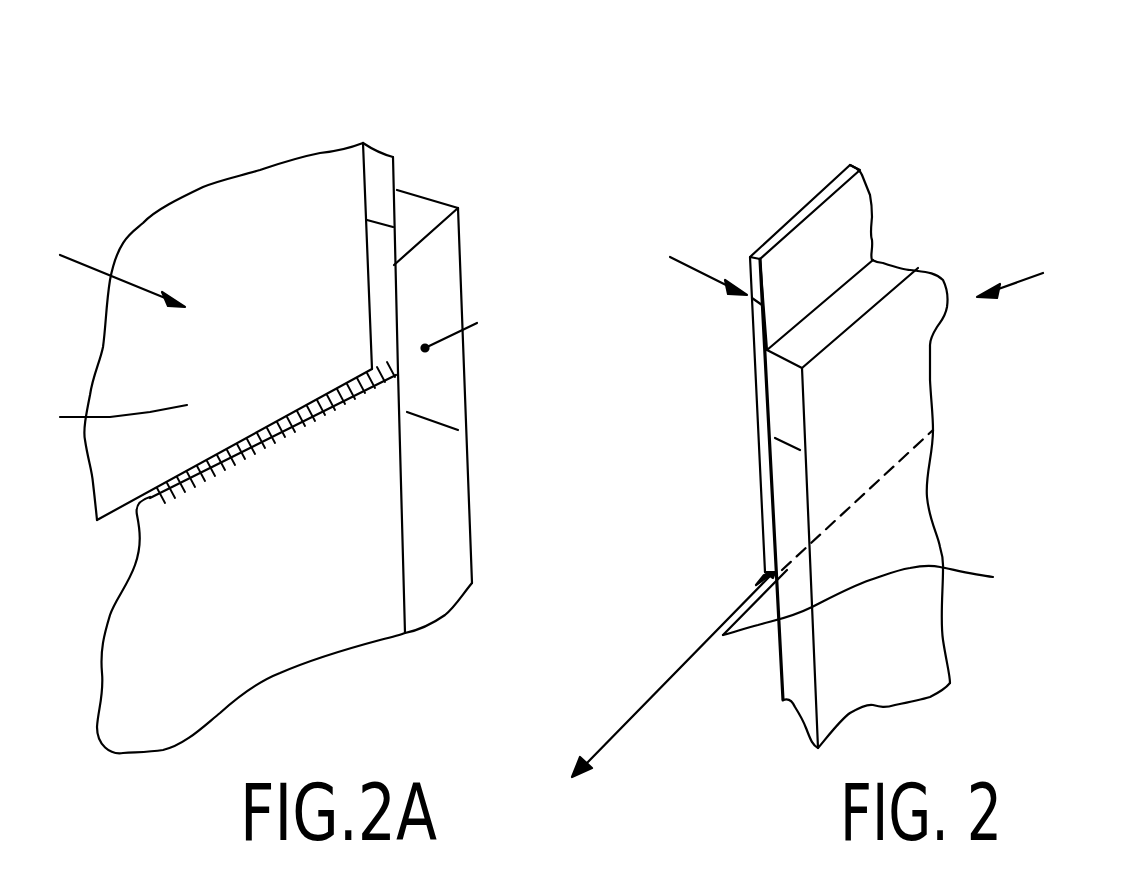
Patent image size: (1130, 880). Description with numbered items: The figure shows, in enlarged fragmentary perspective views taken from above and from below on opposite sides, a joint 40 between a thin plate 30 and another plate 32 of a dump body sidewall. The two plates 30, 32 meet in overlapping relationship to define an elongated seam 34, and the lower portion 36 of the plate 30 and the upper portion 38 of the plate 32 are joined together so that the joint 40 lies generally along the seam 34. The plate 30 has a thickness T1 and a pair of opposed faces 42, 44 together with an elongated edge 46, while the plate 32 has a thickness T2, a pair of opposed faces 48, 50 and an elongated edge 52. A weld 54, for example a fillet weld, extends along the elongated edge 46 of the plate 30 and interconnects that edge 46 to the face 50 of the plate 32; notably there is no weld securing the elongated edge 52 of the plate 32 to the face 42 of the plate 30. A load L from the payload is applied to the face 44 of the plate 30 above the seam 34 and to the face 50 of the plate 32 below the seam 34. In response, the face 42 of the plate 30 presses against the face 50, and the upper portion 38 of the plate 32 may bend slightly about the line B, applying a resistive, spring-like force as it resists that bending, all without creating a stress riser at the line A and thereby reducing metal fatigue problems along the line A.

In FIG. 2A, the plate 30 is at (232, 223).
In FIG. 2, the plate 30 is at (866, 180).
In FIG. 2A, the plate 32 is at (470, 457).
In FIG. 2, the plate 32 is at (897, 517).
In FIG. 2A, the elongated seam 34 is at (458, 208).
In FIG. 2, the elongated seam 34 is at (763, 400).
In FIG. 2A, the lower portion 36 is at (103, 394).
In FIG. 2, the lower portion 36 is at (760, 472).
In FIG. 2A, the upper portion 38 is at (463, 240).
In FIG. 2, the upper portion 38 is at (875, 395).
In FIG. 2A, the joint 40 is at (483, 303).
In FIG. 2, the joint 40 is at (1032, 273).
In FIG. 2A, the face 42 is at (393, 158).
In FIG. 2, the face 42 is at (847, 238).
In FIG. 2A, the face 44 is at (285, 288).
In FIG. 2A, the elongated edge 46 is at (280, 413).
In FIG. 2, the elongated edge 46 is at (770, 574).
In FIG. 2, the face 48 is at (905, 647).
In FIG. 2A, the face 50 is at (327, 618).
In FIG. 2, the face 50 is at (780, 650).
In FIG. 2A, the elongated edge 52 is at (425, 195).
In FIG. 2, the elongated edge 52 is at (870, 280).
In FIG. 2A, the weld 54 is at (230, 470).
In FIG. 2, the weld 54 is at (723, 635).
In FIG. 2A, the line A is at (397, 190).
In FIG. 2, the line A is at (873, 257).
In FIG. 2A, the line B is at (455, 338).
In FIG. 2, the line B is at (871, 594).
In FIG. 2A, the load L is at (83, 260).
In FIG. 2, the load L is at (700, 267).
In FIG. 2A, the thickness T1 is at (383, 215).
In FIG. 2, the thickness T1 is at (750, 307).
In FIG. 2A, the thickness T2 is at (433, 420).
In FIG. 2, the thickness T2 is at (795, 445).